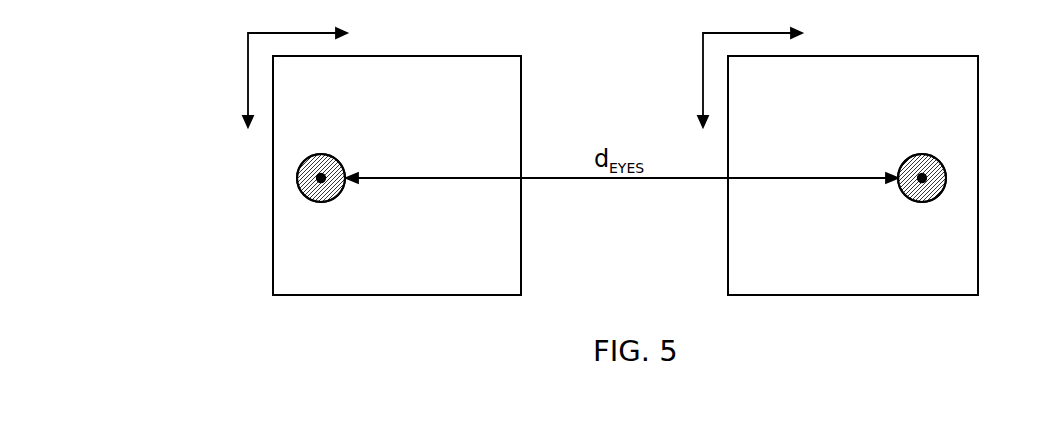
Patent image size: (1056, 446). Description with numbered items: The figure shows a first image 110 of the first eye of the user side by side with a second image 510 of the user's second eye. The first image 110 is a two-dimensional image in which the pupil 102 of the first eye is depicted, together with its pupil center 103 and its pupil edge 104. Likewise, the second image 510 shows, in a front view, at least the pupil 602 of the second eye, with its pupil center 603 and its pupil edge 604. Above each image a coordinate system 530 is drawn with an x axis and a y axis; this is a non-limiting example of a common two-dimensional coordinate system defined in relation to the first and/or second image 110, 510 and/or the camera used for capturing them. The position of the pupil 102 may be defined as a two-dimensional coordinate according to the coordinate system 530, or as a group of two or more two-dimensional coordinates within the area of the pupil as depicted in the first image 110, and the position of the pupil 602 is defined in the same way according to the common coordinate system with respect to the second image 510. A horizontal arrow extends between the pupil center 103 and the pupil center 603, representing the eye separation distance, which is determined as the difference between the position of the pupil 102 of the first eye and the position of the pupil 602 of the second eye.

The coordinate system 530 is at (213, 77).
The first image 110 is at (273, 263).
The pupil 102 is at (322, 155).
The pupil center 103 is at (323, 183).
The pupil edge 104 is at (342, 160).
The second image 510 is at (728, 255).
The pupil 602 is at (922, 155).
The pupil center 603 is at (922, 185).
The pupil edge 604 is at (903, 165).